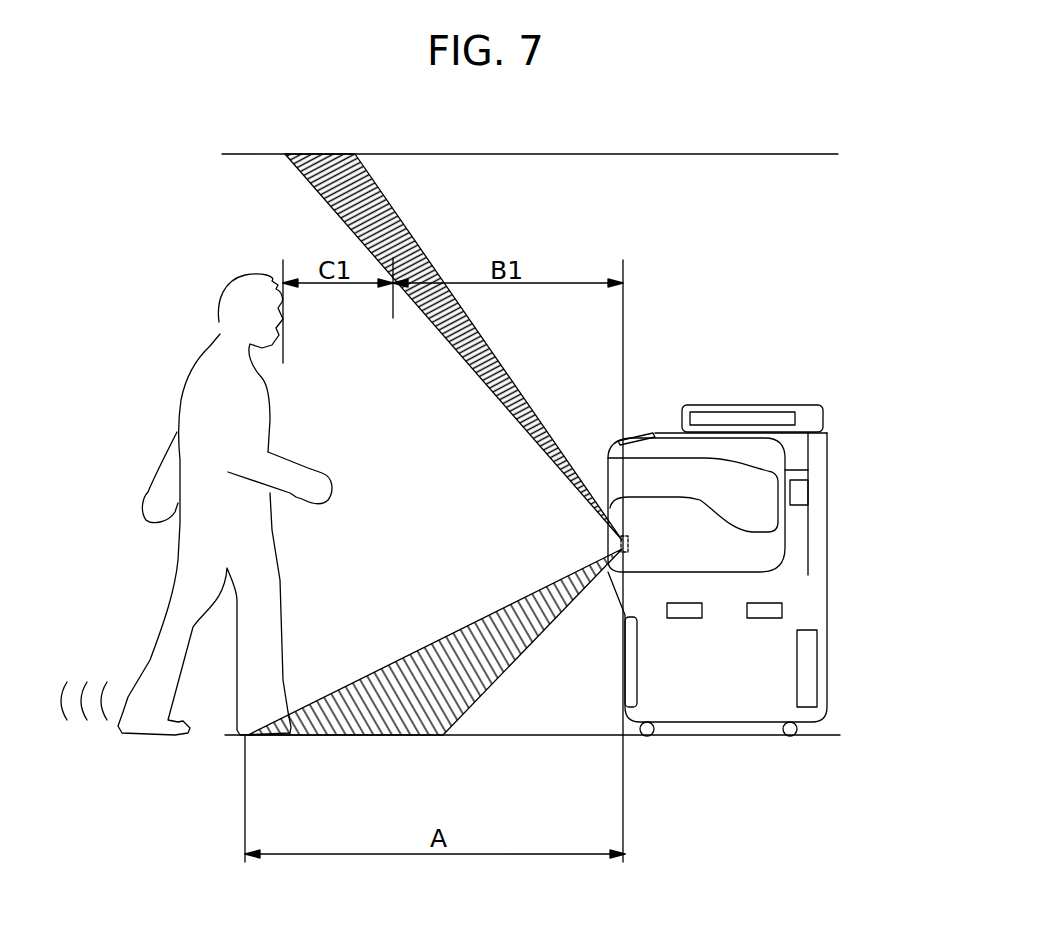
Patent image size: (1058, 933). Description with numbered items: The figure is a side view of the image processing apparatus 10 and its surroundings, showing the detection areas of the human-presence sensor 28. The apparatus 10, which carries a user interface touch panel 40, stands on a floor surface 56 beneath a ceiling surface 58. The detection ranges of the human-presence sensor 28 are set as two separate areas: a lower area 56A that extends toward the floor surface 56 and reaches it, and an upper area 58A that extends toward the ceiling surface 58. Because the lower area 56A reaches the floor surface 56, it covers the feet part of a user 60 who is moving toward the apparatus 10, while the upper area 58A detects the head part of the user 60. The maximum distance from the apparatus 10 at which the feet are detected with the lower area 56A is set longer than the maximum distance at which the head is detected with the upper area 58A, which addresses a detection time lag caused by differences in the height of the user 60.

The image processing apparatus 10 is at (800, 396).
The human-presence sensor 28 is at (630, 543).
The user interface (UI) touch panel 40 is at (640, 431).
The floor surface 56 is at (572, 735).
The lower area 56A is at (397, 712).
The ceiling surface 58 is at (667, 155).
The upper area 58A is at (385, 210).
The user 60 is at (222, 308).